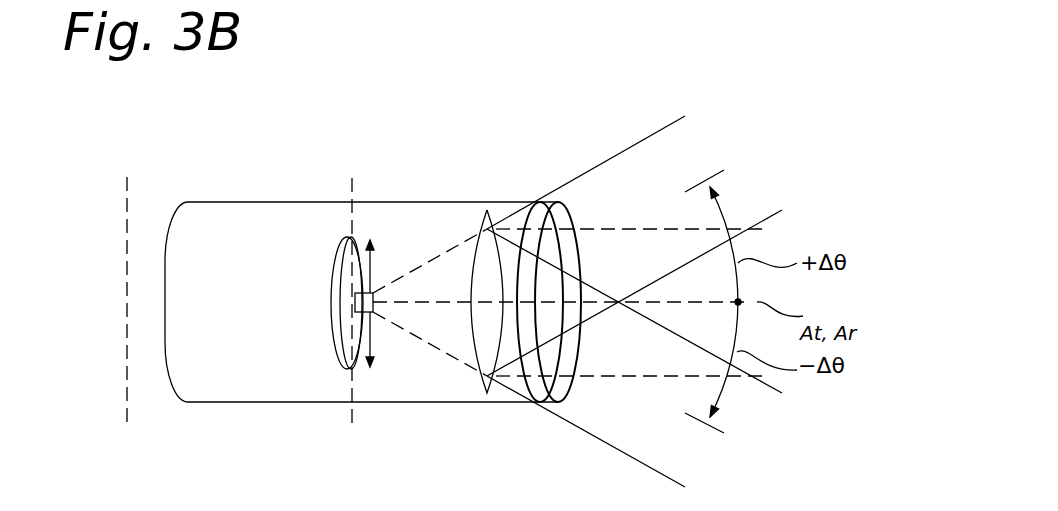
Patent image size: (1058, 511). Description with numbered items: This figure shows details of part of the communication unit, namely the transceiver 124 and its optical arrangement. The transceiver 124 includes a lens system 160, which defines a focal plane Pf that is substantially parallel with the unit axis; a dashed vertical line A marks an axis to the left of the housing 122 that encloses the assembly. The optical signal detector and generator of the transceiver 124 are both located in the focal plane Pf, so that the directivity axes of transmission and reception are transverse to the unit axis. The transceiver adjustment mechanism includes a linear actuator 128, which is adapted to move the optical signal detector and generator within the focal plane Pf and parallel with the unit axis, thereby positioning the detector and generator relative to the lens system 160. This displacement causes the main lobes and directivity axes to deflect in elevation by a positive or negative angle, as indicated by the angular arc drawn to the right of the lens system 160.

The housing / tube 122 is at (226, 218).
The transceiver 124 is at (384, 275).
The linear actuator 128 is at (332, 307).
The lens system 160 is at (487, 258).
The axis A is at (125, 188).
The focal plane Pf is at (352, 413).